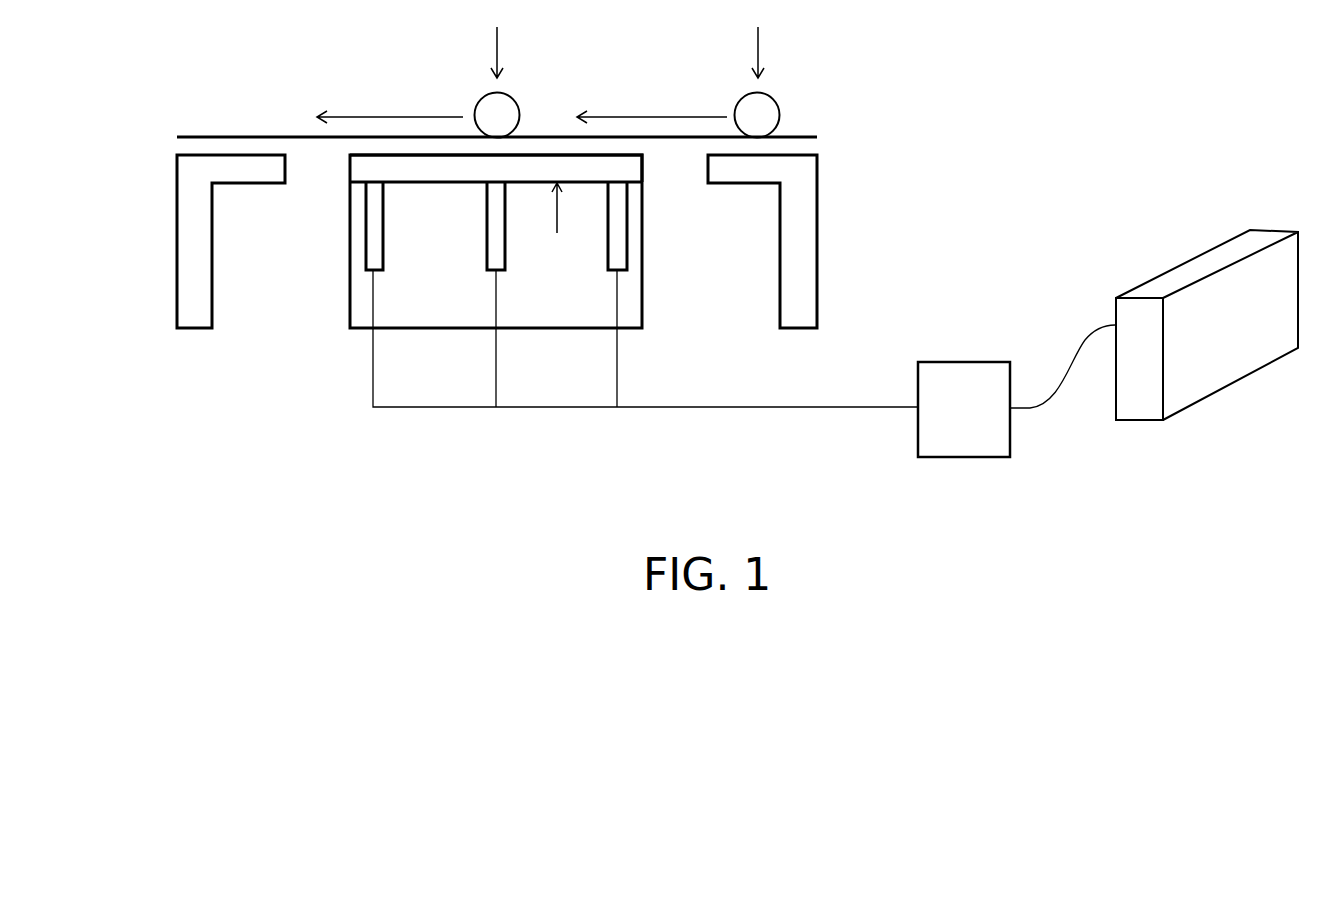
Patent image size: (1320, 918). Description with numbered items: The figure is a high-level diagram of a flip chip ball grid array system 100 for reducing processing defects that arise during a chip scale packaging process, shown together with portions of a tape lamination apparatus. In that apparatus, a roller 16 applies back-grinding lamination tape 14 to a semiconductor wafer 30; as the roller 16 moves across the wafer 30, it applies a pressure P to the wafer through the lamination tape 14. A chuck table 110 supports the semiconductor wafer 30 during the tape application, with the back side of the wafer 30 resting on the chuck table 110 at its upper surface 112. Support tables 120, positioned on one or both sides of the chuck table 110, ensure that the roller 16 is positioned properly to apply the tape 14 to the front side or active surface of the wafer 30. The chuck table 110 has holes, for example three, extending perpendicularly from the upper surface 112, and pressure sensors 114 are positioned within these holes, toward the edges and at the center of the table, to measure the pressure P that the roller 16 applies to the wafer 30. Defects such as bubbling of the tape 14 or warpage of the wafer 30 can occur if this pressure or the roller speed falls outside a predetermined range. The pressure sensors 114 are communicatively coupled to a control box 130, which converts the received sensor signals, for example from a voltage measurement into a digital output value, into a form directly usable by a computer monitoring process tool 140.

The back-grinding lamination tape 14 is at (797, 138).
The roller 16 is at (517, 98).
The semiconductor wafer 30 is at (644, 168).
The flip chip ball grid array system 100 is at (700, 242).
The chuck table 110 is at (580, 313).
The upper surface 112 is at (561, 224).
The pressure sensors 114 is at (660, 255).
The support tables 120 is at (186, 239).
The control box 130 is at (987, 423).
The computer monitoring process tool 140 is at (1256, 341).